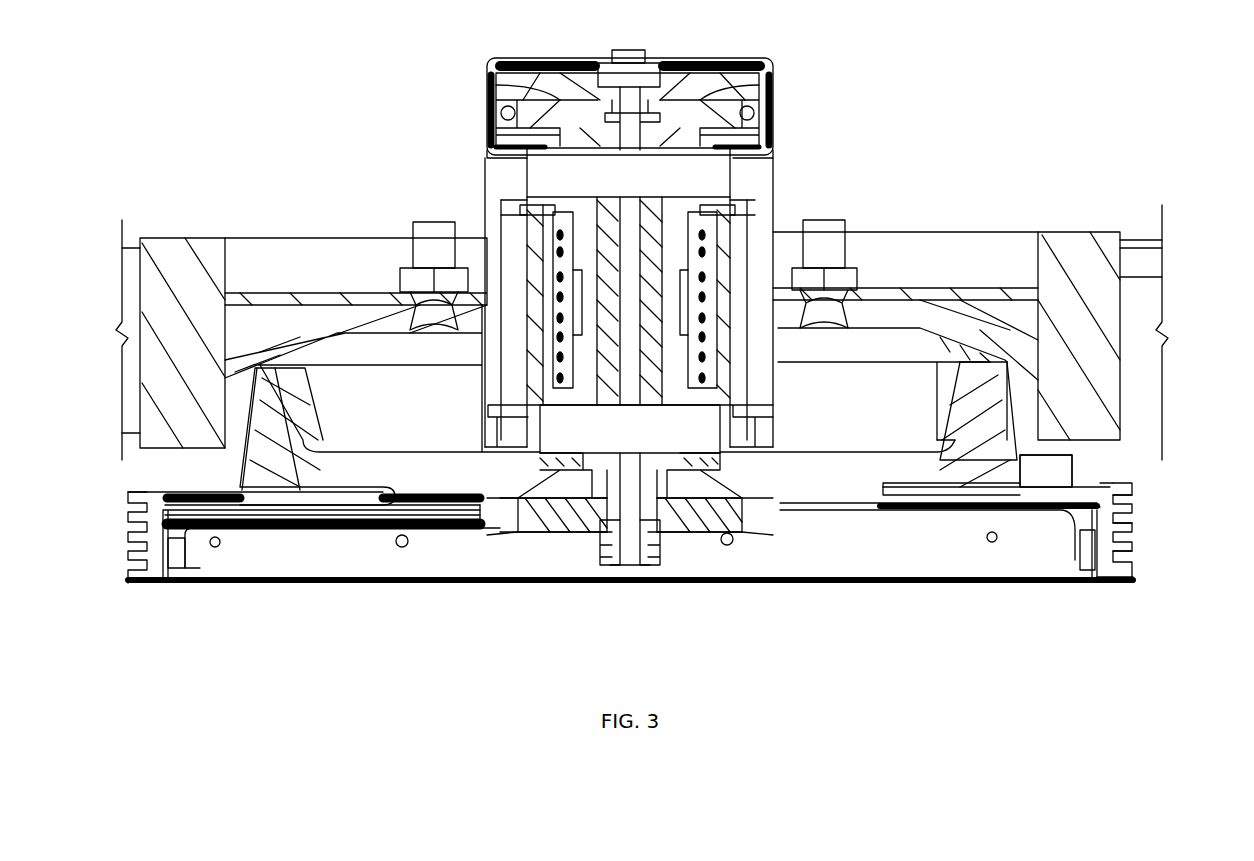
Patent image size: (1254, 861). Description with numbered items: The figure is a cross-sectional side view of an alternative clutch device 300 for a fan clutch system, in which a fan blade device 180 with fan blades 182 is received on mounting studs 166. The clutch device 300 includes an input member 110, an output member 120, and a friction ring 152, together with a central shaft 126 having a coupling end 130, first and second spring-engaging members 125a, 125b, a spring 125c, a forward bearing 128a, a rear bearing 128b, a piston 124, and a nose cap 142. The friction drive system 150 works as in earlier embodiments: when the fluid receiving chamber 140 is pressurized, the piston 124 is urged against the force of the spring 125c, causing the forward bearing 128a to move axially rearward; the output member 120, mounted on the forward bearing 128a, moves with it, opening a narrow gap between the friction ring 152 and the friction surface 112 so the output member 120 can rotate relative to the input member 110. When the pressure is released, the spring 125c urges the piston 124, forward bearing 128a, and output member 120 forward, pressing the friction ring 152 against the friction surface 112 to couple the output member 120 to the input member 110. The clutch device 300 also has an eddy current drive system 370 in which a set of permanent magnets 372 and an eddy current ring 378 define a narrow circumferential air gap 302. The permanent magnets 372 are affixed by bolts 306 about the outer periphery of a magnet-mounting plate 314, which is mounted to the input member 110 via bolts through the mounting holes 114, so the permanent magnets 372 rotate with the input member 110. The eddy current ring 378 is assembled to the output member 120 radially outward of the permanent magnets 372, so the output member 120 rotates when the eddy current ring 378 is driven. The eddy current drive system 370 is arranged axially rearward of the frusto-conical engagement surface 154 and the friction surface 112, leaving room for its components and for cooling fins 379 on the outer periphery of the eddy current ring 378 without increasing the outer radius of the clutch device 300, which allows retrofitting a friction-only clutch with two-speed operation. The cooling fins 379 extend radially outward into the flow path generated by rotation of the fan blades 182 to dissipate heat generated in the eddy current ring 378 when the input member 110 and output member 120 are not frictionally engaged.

The clutch device 300 is at (203, 105).
The input member 110 is at (965, 410).
The friction surface 112 is at (950, 430).
The mounting holes 114 is at (425, 540).
The output member 120 is at (1075, 465).
The piston 124 is at (496, 100).
The first spring-engaging member 125a is at (487, 203).
The second spring-engaging member 125b is at (553, 380).
The spring 125c is at (717, 380).
The central shaft 126 is at (653, 113).
The forward bearing 128a is at (628, 172).
The rear bearing 128b is at (630, 429).
The coupling end 130 is at (607, 500).
The fluid receiving chamber 140 is at (525, 83).
The nose cap 142 is at (773, 83).
The friction drive system 150 is at (150, 605).
The friction ring 152 is at (303, 380).
The frusto-conical engagement surface 154 is at (330, 400).
The mounting studs 166 is at (413, 222).
The fan blade device 180 is at (1040, 240).
The fan blades 182 is at (1140, 240).
The circumferential air gap 302 is at (1120, 567).
The bolts 306 is at (160, 583).
The magnet-mounting plate 314 is at (1070, 565).
The eddy current drive system 370 is at (1212, 475).
The permanent magnets 372 is at (1105, 577).
The eddy current ring 378 is at (1140, 483).
The cooling fins 379 is at (1132, 512).